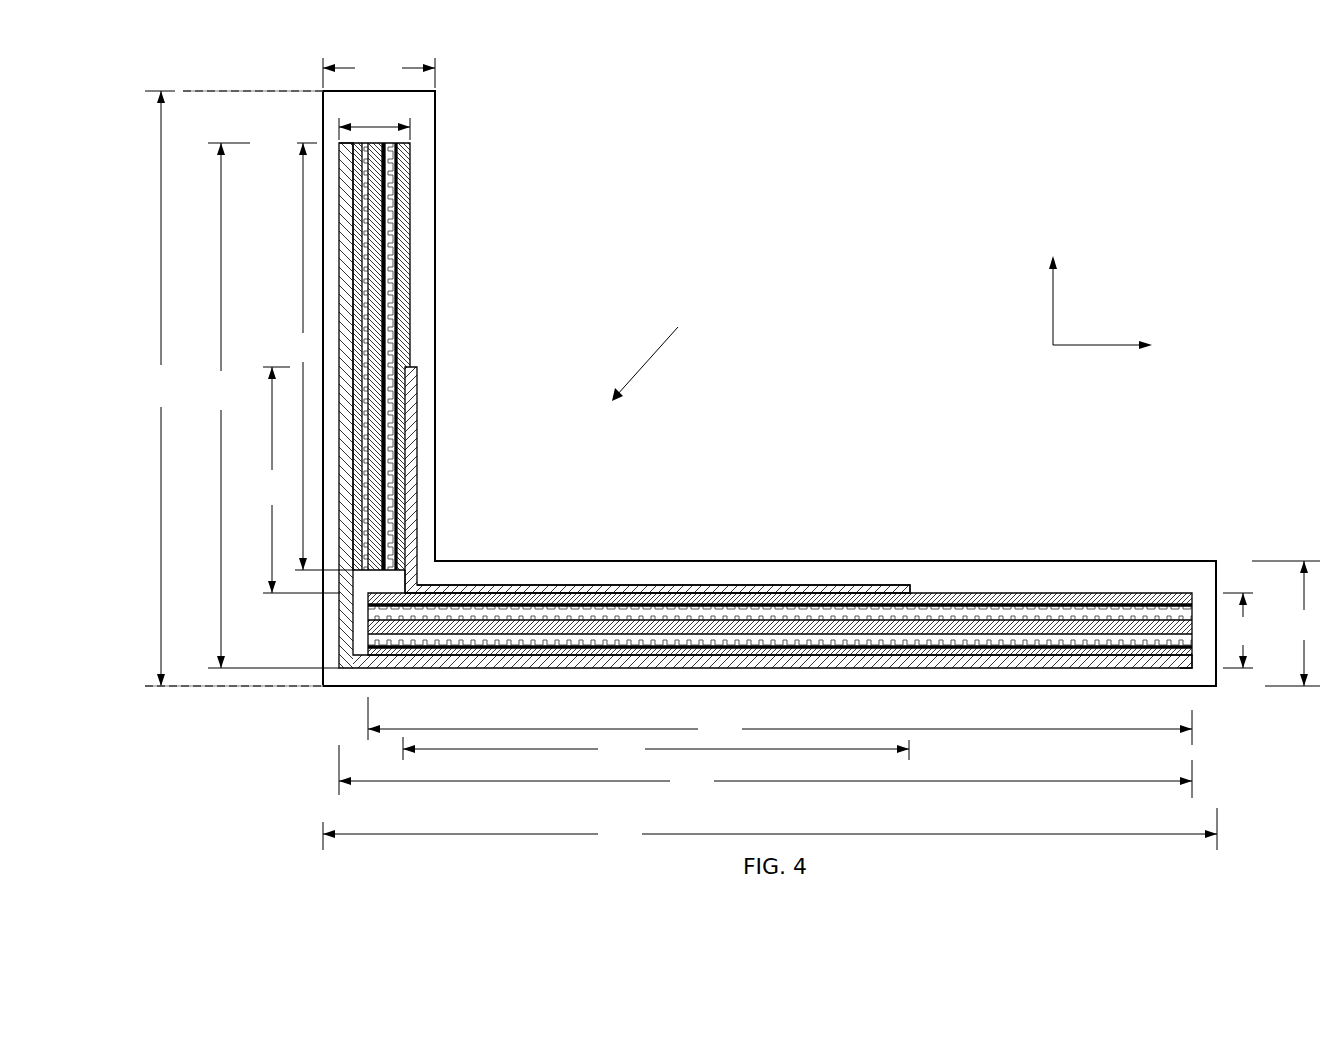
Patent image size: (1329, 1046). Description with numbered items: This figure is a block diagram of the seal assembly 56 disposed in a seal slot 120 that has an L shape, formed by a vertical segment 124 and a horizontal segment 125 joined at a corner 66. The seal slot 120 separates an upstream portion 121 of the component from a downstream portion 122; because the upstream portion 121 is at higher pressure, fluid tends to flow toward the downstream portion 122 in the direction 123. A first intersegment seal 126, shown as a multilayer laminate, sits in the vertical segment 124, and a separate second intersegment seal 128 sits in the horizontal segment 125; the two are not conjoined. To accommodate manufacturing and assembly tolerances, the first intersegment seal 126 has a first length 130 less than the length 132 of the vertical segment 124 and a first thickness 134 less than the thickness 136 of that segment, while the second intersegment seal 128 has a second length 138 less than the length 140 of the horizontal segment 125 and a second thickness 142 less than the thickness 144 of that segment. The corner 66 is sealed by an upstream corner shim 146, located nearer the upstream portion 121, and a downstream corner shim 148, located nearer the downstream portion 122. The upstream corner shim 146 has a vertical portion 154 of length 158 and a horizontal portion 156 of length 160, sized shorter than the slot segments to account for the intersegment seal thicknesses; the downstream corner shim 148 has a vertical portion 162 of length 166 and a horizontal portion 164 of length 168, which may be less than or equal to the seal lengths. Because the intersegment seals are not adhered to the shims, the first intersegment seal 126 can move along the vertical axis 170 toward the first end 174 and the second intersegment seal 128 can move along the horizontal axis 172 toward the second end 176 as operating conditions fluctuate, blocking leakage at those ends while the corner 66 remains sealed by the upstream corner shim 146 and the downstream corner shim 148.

The seal slot 120 is at (829, 108).
The upstream portion 121 is at (476, 470).
The downstream portion 122 is at (312, 819).
The direction 123 is at (645, 363).
The vertical segment 124 is at (436, 262).
The horizontal segment 125 is at (770, 687).
The first intersegment seal 126 is at (405, 213).
The second intersegment seal 128 is at (1030, 625).
The first length 130 is at (316, 356).
The length of the vertical segment 132 is at (230, 388).
The first thickness 134 is at (374, 119).
The thickness of the vertical segment 136 is at (379, 72).
The second length 138 is at (780, 721).
The length of the horizontal segment 140 is at (770, 829).
The second thickness 142 is at (1243, 630).
The thickness of the horizontal segment 144 is at (1288, 623).
The upstream corner shim 146 is at (411, 576).
The downstream corner shim 148 is at (342, 646).
The vertical portion 154 is at (418, 410).
The horizontal portion 156 is at (540, 587).
The length 158 is at (293, 480).
The length 160 is at (656, 749).
The vertical portion 162 is at (339, 143).
The horizontal portion 164 is at (1190, 662).
The length 166 is at (269, 405).
The length 168 is at (765, 771).
The vertical axis 170 is at (1053, 313).
The horizontal axis 172 is at (1103, 346).
The first end 174 is at (416, 90).
The second end 176 is at (1218, 577).
The seal assembly 56 is at (326, 627).
The corner 66 is at (323, 687).